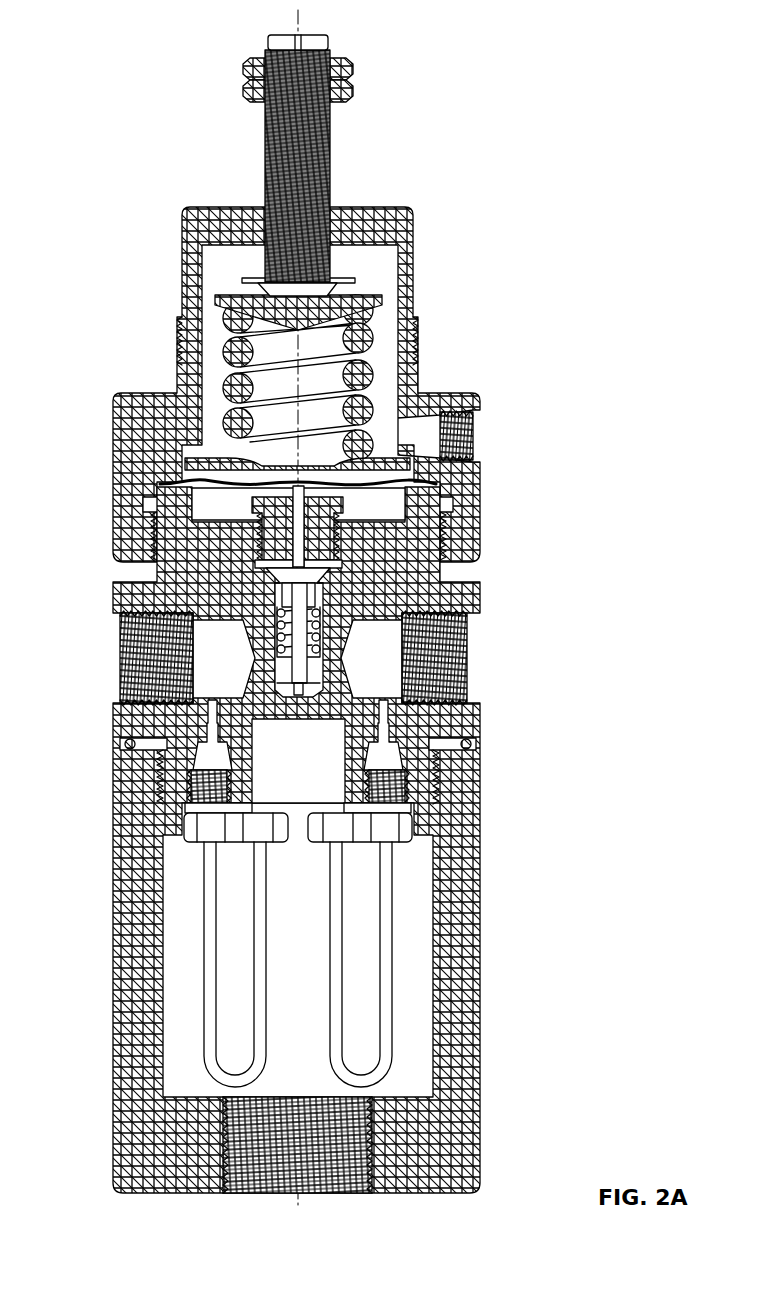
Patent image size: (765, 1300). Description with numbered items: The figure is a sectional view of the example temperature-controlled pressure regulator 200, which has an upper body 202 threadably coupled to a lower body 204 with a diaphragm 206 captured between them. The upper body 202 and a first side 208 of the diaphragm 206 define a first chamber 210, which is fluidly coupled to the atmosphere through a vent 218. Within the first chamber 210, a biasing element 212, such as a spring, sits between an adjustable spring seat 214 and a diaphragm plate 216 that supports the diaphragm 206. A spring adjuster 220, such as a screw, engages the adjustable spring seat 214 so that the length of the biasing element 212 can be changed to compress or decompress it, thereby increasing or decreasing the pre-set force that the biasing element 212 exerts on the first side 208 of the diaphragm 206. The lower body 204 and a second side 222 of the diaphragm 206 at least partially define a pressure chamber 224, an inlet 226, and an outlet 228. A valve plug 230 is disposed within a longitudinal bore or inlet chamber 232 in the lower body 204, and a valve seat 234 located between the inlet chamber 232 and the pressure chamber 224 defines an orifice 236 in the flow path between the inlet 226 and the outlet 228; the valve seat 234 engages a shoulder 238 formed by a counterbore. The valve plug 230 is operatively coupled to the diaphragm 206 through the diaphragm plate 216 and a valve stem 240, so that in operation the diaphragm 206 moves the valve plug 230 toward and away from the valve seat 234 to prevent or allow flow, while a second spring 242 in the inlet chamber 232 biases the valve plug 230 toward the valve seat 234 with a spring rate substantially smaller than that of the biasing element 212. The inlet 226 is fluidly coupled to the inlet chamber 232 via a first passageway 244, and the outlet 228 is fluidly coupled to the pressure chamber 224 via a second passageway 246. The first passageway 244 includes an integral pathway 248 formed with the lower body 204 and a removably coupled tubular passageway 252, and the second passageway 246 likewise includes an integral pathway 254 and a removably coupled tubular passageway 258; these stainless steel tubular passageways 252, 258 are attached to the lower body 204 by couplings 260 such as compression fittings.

The regulator 200 is at (148, 48).
The upper body 202 is at (413, 297).
The lower body 204 is at (485, 590).
The diaphragm 206 is at (187, 462).
The first side 208 is at (267, 421).
The first chamber 210 is at (302, 344).
The biasing element 212 is at (368, 378).
The adjustable spring seat 214 is at (362, 284).
The diaphragm plate 216 is at (213, 480).
The vent 218 is at (483, 438).
The spring adjuster 220 is at (327, 163).
The second side 222 is at (215, 522).
The pressure chamber 224 is at (388, 511).
The inlet 226 is at (485, 645).
The outlet 228 is at (113, 688).
The valve plug 230 is at (127, 666).
The inlet chamber 232 is at (280, 628).
The valve seat 234 is at (337, 565).
The orifice 236 is at (293, 598).
The shoulder 238 is at (327, 578).
The valve stem 240 is at (277, 577).
The second spring 242 is at (317, 637).
The first passageway 244 is at (452, 960).
The second passageway 246 is at (165, 970).
The integral pathway 248 is at (385, 717).
The tubular passageway 252 is at (385, 1015).
The integral pathway 254 is at (205, 713).
The tubular passageway 258 is at (212, 1035).
The couplings 260 is at (184, 826).